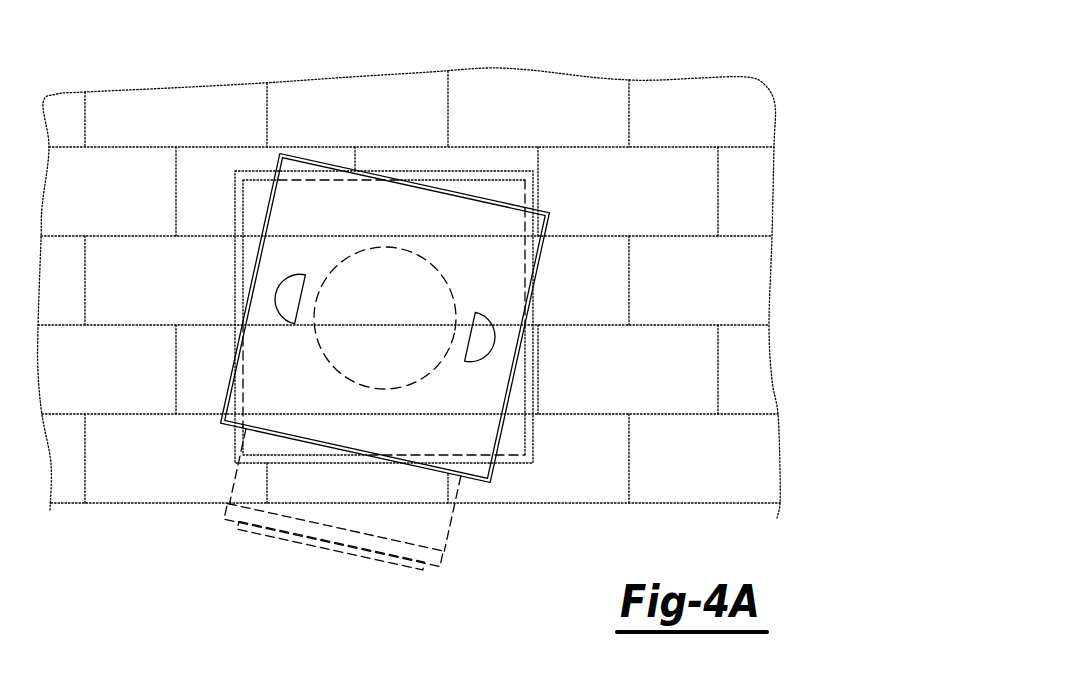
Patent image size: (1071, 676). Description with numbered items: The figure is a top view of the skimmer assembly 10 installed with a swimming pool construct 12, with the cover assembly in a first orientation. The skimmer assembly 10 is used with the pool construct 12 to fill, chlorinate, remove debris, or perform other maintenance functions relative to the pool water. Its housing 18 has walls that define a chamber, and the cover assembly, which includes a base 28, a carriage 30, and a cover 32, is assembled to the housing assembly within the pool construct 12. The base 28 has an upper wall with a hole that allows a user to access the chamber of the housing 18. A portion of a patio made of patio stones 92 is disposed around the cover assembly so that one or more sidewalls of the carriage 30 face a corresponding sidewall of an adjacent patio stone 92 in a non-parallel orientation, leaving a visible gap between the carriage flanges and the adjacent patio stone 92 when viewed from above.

The skimmer assembly 10 is at (366, 348).
The swimming pool construct 12 is at (665, 78).
The housing 18 is at (453, 520).
The base 28 is at (510, 430).
The carriage 30 is at (287, 232).
The cover 32 is at (432, 207).
The patio stones 92 is at (747, 360).